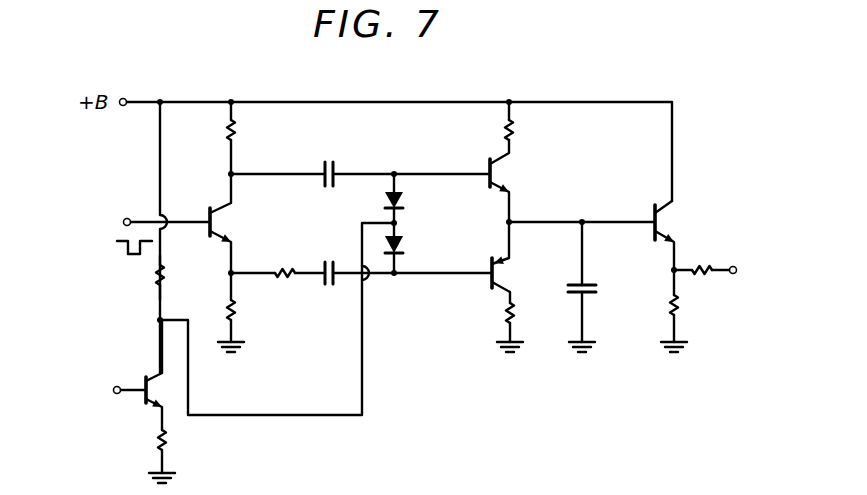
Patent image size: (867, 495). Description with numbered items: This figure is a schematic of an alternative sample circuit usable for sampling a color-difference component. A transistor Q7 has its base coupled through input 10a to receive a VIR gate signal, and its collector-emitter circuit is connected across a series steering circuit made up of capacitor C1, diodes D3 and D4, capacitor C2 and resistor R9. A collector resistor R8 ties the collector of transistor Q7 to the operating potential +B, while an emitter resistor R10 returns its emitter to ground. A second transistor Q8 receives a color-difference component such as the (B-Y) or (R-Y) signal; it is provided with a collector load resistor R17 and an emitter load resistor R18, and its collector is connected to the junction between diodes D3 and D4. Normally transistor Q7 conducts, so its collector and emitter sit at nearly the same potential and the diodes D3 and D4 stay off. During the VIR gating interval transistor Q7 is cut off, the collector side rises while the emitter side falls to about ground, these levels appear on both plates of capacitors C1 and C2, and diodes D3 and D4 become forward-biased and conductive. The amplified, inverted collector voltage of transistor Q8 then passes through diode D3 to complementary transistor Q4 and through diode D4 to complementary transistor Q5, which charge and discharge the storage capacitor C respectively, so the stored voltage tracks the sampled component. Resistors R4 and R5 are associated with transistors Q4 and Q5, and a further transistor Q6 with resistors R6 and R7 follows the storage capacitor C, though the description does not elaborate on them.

The input terminal 10a is at (122, 221).
The collector load resistor R17 is at (163, 277).
The transistor Q8 is at (144, 380).
The emitter load resistor R18 is at (166, 440).
The collector resistor R8 is at (234, 130).
The capacitor C1 is at (334, 165).
The transistor Q7 is at (210, 212).
The emitter resistor R10 is at (234, 312).
The resistor R9 is at (285, 266).
The capacitor C2 is at (328, 261).
The diode D3 is at (404, 201).
The diode D4 is at (404, 259).
The complementary transistor Q4 is at (490, 161).
The resistor R4 is at (512, 128).
The complementary transistor Q5 is at (492, 262).
The resistor R5 is at (514, 312).
The storage capacitor C is at (588, 287).
The transistor Q6 is at (655, 210).
The resistor R6 is at (671, 297).
The resistor R7 is at (708, 273).